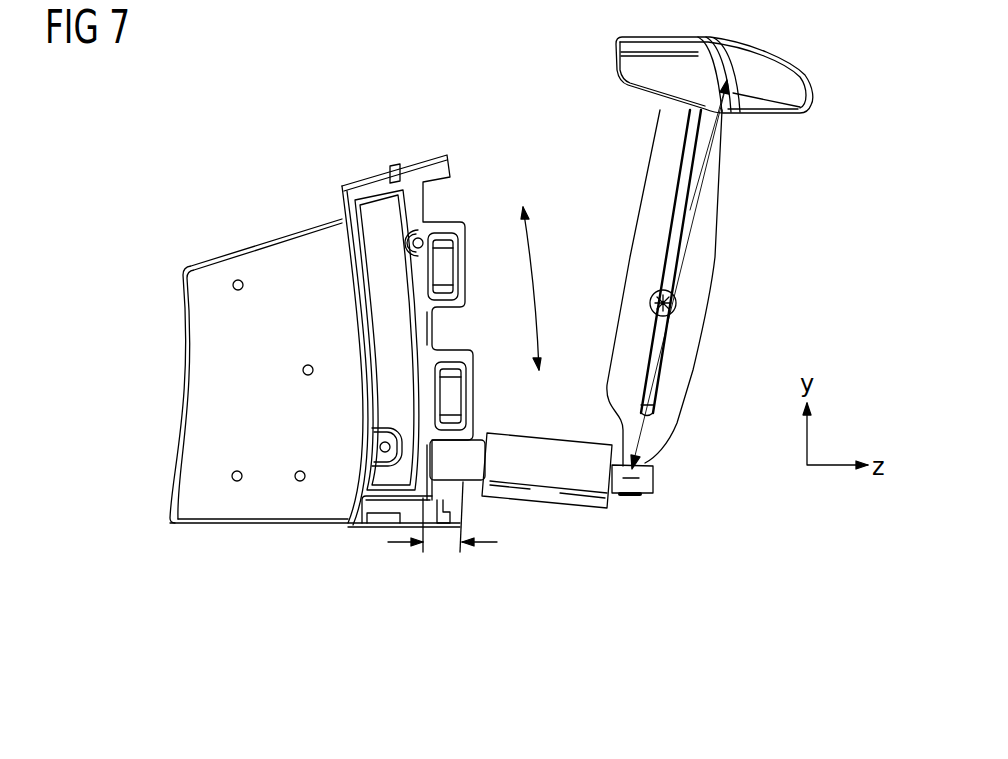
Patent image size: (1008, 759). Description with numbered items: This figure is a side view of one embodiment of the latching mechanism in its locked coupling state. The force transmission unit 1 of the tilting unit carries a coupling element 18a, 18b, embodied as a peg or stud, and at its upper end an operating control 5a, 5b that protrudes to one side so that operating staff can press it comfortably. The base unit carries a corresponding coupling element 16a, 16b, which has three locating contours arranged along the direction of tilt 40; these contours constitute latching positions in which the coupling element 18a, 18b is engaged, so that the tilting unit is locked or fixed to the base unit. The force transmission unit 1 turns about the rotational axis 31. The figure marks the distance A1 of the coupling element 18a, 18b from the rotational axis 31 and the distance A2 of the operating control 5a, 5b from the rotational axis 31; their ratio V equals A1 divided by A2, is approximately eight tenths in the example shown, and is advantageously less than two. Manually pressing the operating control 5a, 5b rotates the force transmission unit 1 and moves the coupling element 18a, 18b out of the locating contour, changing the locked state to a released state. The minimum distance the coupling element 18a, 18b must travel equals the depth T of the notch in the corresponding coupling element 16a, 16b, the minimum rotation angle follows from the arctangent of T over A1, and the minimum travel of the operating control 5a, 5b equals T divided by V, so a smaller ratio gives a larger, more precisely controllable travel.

The force transmission unit 1 is at (657, 175).
The operating control 5a is at (650, 75).
The operating control 5b is at (617, 50).
The corresponding coupling element 16a is at (262, 341).
The corresponding coupling element 16b is at (218, 353).
The coupling element 18a is at (541, 517).
The coupling element 18b is at (558, 517).
The rotational axis 31 is at (677, 303).
The direction of tilt 40 is at (533, 293).
The distance of the coupling element from the rotational axis A1 is at (648, 430).
The distance of the operating control from the rotational axis A2 is at (708, 177).
The depth of the notch T is at (444, 548).